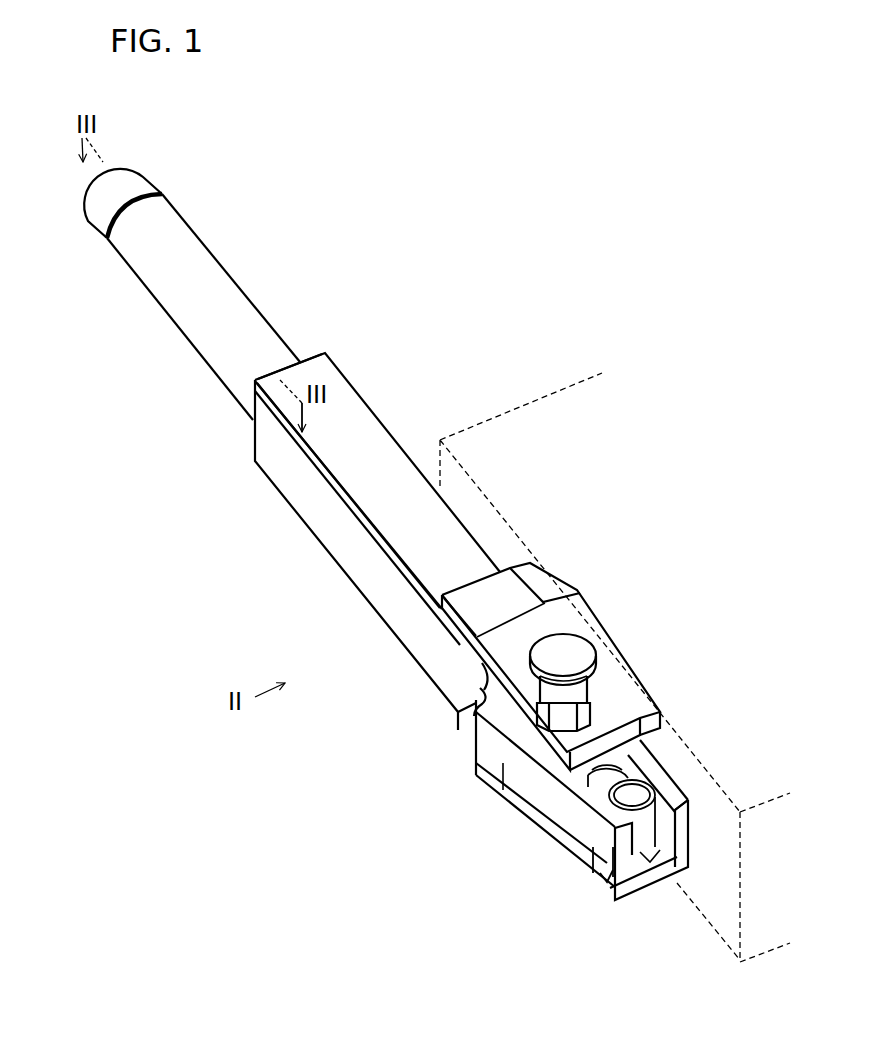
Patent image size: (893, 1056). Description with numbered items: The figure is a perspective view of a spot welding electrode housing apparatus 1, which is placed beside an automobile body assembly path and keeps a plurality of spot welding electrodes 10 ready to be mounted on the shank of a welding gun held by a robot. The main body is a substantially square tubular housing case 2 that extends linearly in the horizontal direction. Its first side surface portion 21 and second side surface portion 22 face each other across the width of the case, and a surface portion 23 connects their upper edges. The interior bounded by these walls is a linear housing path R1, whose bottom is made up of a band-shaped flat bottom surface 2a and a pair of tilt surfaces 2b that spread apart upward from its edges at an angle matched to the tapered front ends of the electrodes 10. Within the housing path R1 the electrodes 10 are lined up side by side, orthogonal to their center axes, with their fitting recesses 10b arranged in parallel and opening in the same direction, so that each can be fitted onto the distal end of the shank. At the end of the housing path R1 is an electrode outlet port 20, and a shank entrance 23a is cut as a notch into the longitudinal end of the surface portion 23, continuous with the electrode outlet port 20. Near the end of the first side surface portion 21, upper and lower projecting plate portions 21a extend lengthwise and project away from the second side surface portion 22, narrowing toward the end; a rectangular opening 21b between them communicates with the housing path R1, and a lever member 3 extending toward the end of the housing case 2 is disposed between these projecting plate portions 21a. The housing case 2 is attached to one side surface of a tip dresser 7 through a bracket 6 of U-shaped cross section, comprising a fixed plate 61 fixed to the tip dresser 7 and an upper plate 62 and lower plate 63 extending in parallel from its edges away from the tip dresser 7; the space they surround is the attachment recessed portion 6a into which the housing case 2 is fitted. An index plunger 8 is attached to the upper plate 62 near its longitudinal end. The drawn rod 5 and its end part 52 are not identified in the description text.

The spot welding electrode housing apparatus 1 is at (468, 265).
The housing case 2 is at (283, 522).
The flat bottom surface 2a is at (633, 893).
The tilt surfaces 2b is at (647, 890).
The lever member 3 is at (515, 822).
The rod 5 is at (268, 302).
The rod end cap 52 is at (208, 245).
The bracket 6 is at (473, 577).
The attachment recessed portion 6a is at (547, 601).
The tip dresser 7 is at (548, 393).
The index plunger 8 is at (577, 620).
The spot welding electrodes 10 is at (640, 767).
The fitting recesses 10b is at (675, 830).
The electrode outlet port 20 is at (667, 837).
The first side surface portion 21 is at (348, 580).
The projecting plate portions 21a is at (547, 840).
The opening 21b is at (603, 890).
The second side surface portion 22 is at (690, 790).
The surface portion 23 is at (358, 387).
The shank entrance 23a is at (592, 840).
The fixed plate 61 is at (540, 577).
The upper plate 62 is at (457, 600).
The lower plate 63 is at (467, 733).
The housing path R1 is at (660, 880).